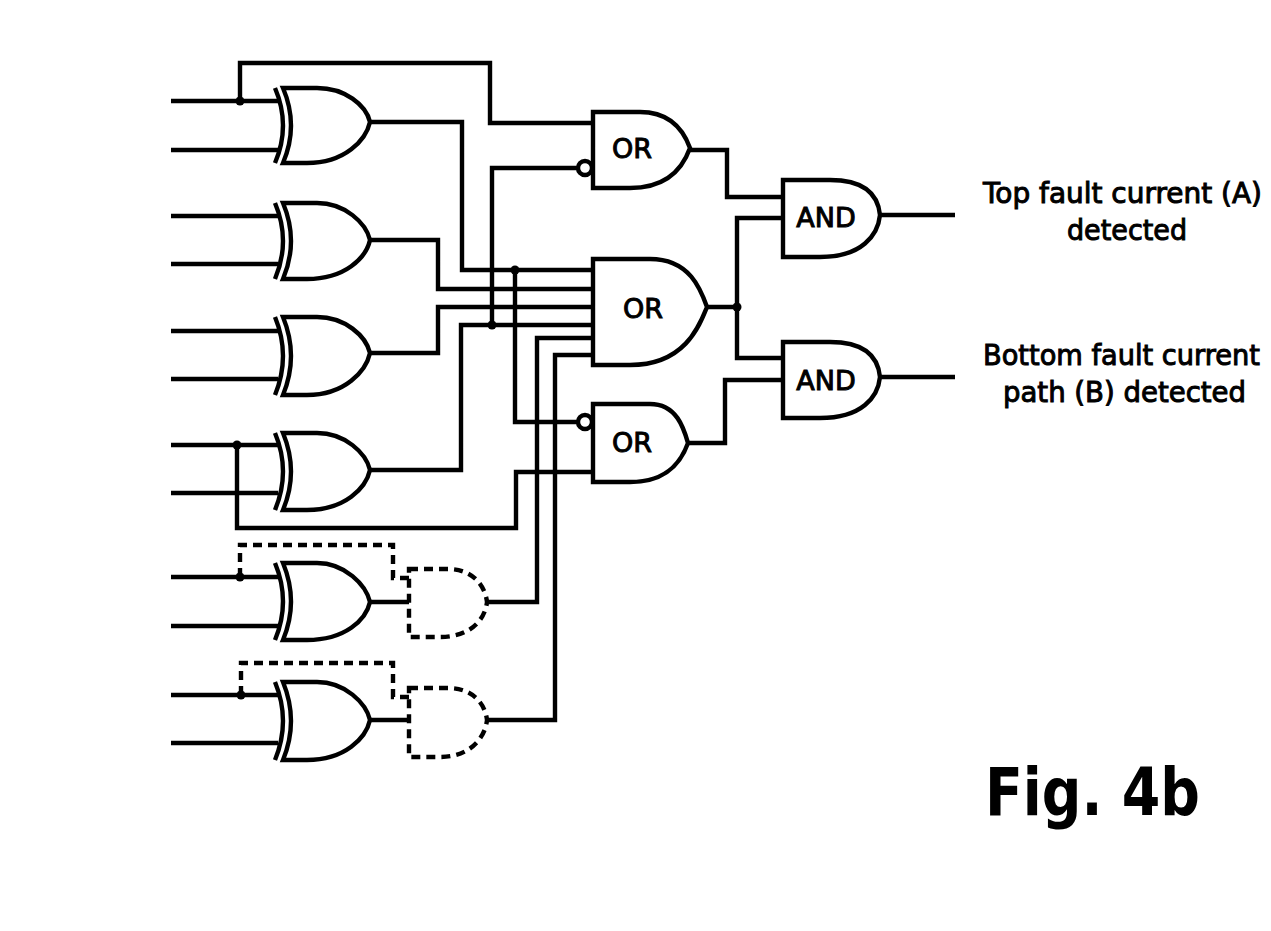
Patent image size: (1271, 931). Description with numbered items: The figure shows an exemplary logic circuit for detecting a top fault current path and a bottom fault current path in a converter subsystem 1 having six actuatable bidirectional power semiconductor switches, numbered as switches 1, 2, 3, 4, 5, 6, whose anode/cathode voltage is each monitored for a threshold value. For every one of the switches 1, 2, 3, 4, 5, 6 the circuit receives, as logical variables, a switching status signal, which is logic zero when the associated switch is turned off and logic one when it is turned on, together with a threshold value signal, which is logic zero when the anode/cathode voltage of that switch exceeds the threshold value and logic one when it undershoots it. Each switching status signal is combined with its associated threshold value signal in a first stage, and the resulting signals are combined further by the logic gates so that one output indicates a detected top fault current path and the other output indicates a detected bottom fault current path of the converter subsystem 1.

The converter subsystem 1 is at (321, 166).
The sensor stage 2 (SS2/SUce2 XOR comparator) 2 is at (321, 243).
The sensor stage 3 (SS3/SUce3 XOR comparator) 3 is at (321, 351).
The sensor stage 4 (SS4/SUce4 XOR comparator) 4 is at (321, 348).
The sensor stage 5 (SS5/SUce5 XOR comparator with AND) 5 is at (321, 489).
The sensor stage 6 (SS6/SUce6 XOR comparator with AND) 6 is at (321, 557).